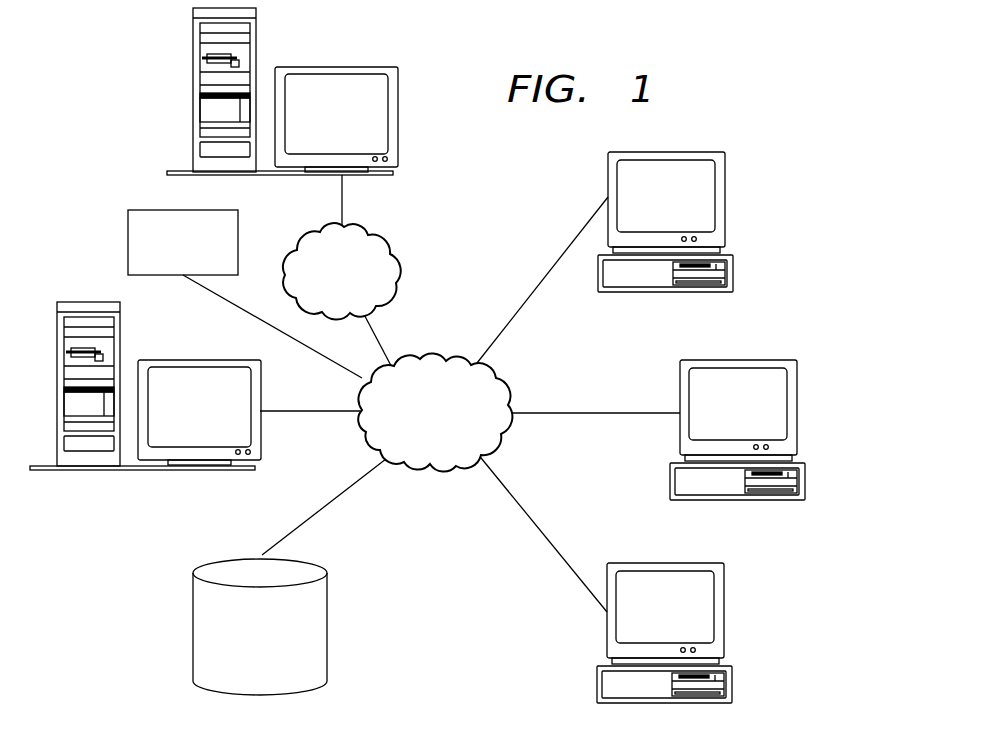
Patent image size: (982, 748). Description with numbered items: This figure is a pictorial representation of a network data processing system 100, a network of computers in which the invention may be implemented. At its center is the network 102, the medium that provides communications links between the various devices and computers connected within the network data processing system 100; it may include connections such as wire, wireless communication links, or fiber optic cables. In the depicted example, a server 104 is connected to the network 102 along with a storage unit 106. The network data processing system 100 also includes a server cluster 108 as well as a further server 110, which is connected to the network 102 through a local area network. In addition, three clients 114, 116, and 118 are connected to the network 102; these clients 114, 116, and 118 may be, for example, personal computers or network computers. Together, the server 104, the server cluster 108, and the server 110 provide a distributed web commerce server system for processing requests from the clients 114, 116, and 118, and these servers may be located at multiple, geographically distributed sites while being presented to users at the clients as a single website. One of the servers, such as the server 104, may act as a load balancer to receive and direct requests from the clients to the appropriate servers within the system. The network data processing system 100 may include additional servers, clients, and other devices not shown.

The network data processing system 100 is at (806, 190).
The network 102 is at (457, 440).
The server 104 is at (220, 417).
The storage unit 106 is at (281, 668).
The server cluster 108 is at (128, 243).
The server 110 is at (358, 122).
The client 114 is at (690, 211).
The client 116 is at (398, 265).
The client 118 is at (689, 623).